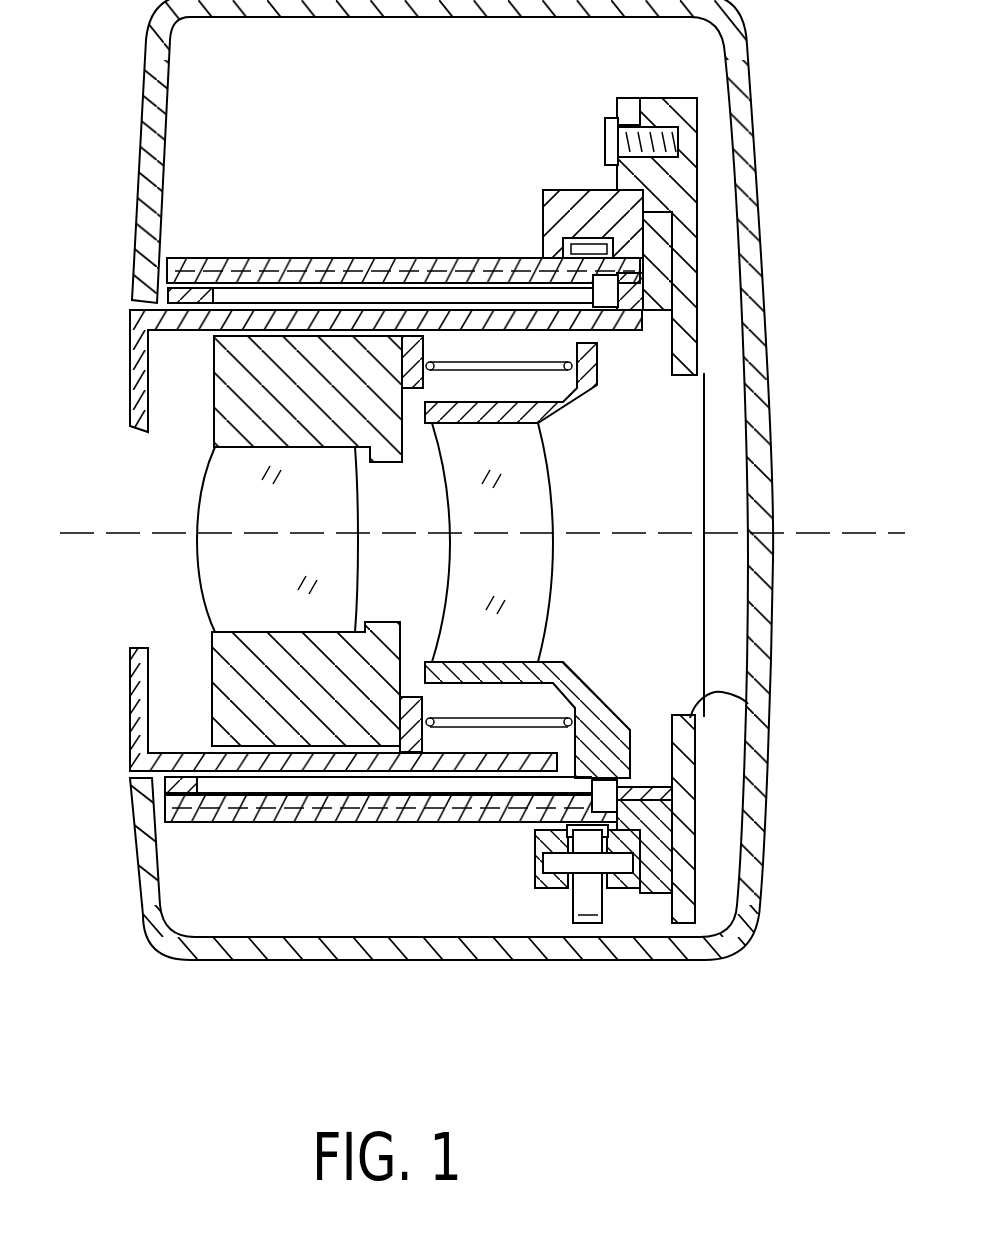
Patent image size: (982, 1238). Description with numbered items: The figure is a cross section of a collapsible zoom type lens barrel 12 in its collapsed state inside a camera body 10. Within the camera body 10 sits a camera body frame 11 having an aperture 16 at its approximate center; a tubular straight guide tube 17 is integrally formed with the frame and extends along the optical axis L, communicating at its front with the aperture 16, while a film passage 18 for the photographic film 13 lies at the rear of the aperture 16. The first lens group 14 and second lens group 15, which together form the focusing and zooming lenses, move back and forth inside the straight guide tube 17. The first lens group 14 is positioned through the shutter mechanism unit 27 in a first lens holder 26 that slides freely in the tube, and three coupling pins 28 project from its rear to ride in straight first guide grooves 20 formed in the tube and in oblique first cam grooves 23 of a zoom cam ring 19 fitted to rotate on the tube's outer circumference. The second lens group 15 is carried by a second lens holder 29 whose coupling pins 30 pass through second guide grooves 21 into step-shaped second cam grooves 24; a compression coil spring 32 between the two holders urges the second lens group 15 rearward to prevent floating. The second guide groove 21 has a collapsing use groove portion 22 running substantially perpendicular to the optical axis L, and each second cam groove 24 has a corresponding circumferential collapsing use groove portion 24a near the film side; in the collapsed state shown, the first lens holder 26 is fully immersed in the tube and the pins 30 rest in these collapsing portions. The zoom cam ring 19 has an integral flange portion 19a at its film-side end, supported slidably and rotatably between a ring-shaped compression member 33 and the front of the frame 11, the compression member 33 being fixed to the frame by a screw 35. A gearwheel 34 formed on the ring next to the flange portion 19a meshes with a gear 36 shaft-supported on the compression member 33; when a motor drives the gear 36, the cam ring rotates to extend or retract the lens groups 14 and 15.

The camera body 10 is at (747, 930).
The camera body frame 11 is at (700, 155).
The zoom type lens barrel 12 is at (318, 226).
The photographic film 13 is at (703, 470).
The first lens group 14 is at (217, 490).
The second lens group 15 is at (542, 508).
The aperture 16 is at (748, 704).
The straight guide tube 17 is at (163, 293).
The film passage 18 is at (725, 618).
The zoom cam ring 19 is at (392, 268).
The flange portion 19a is at (667, 250).
The first guide groove 20 is at (230, 297).
The second guide groove 21 is at (275, 783).
The collapsing use groove portion 22 is at (670, 788).
The first cam groove 23 is at (673, 278).
The second cam groove 24 is at (447, 812).
The collapsing use groove portion 24a is at (670, 823).
The first lens holder 26 is at (130, 370).
The shutter mechanism unit 27 is at (220, 682).
The coupling pin 28 is at (672, 307).
The second lens holder 29 is at (597, 707).
The coupling pin 30 is at (630, 775).
The compression coil spring 32 is at (523, 365).
The compression member 33 is at (557, 190).
The gearwheel 34 is at (587, 242).
The screw 35 is at (665, 110).
The gear 36 is at (580, 907).
The optical axis L is at (577, 540).